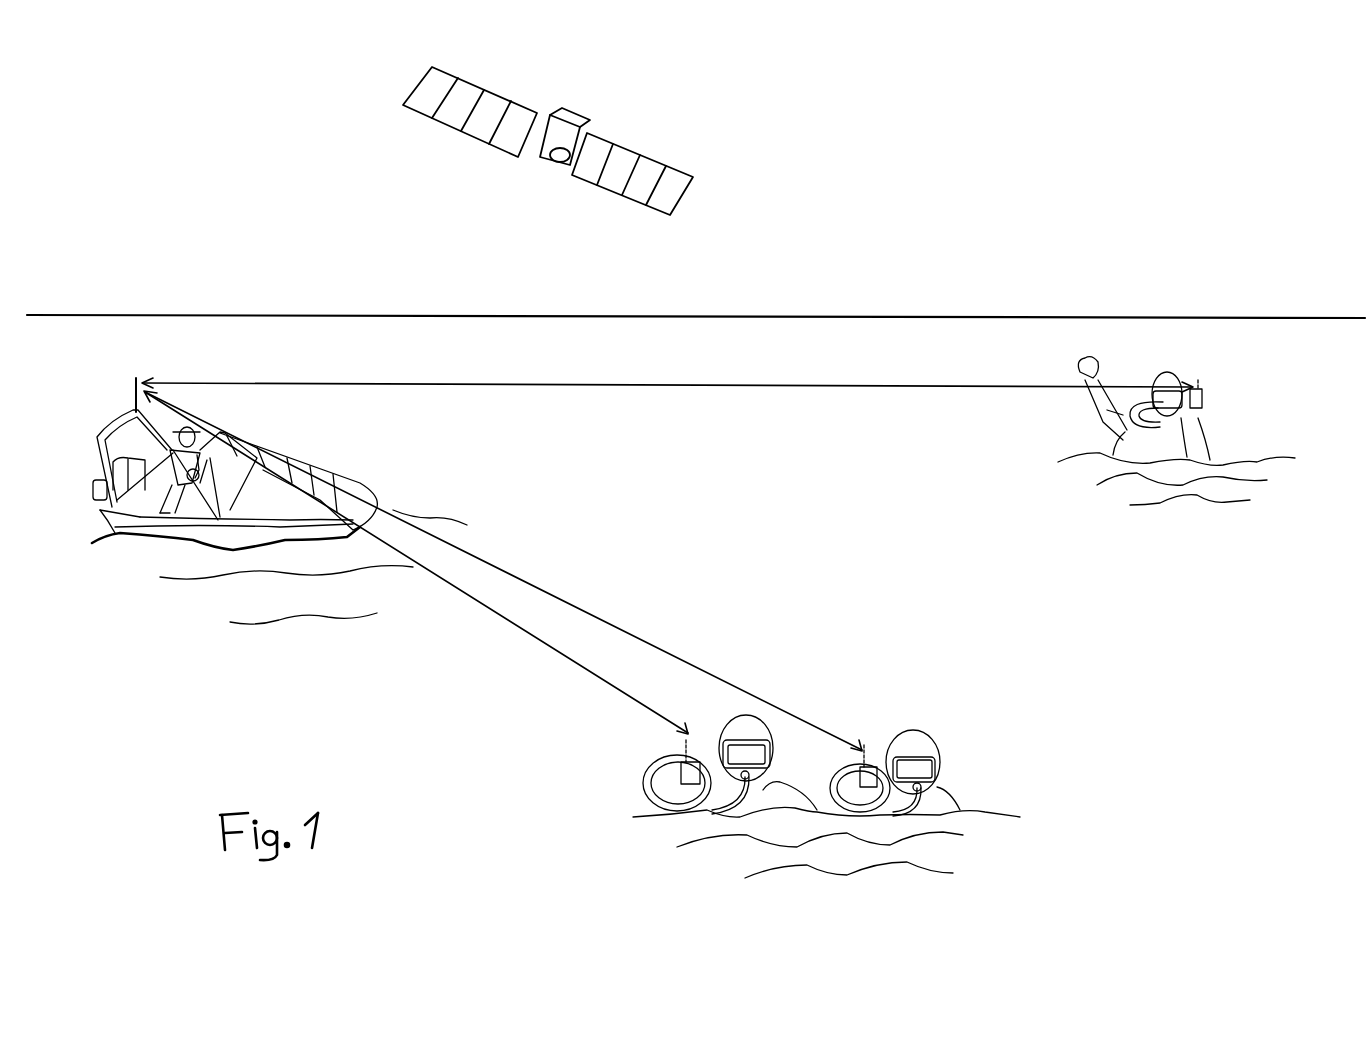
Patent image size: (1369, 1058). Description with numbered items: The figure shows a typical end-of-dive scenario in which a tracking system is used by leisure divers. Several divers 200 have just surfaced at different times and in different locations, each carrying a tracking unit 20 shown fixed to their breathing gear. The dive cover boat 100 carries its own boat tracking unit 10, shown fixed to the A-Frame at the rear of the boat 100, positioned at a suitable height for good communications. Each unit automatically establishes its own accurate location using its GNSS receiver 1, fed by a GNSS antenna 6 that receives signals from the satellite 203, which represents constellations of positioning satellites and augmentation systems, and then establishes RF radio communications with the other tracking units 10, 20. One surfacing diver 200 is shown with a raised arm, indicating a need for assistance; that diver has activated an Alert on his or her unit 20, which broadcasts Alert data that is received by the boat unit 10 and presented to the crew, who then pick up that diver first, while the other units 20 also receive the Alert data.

The GNSS receiver 1 is at (130, 391).
The GNSS antenna 6 is at (1210, 383).
The boat tracking unit 10 is at (147, 378).
The diver tracking unit 20 is at (1212, 390).
The dive cover boat 100 is at (357, 477).
The diver 200 is at (1117, 445).
The satellite 203 is at (668, 152).